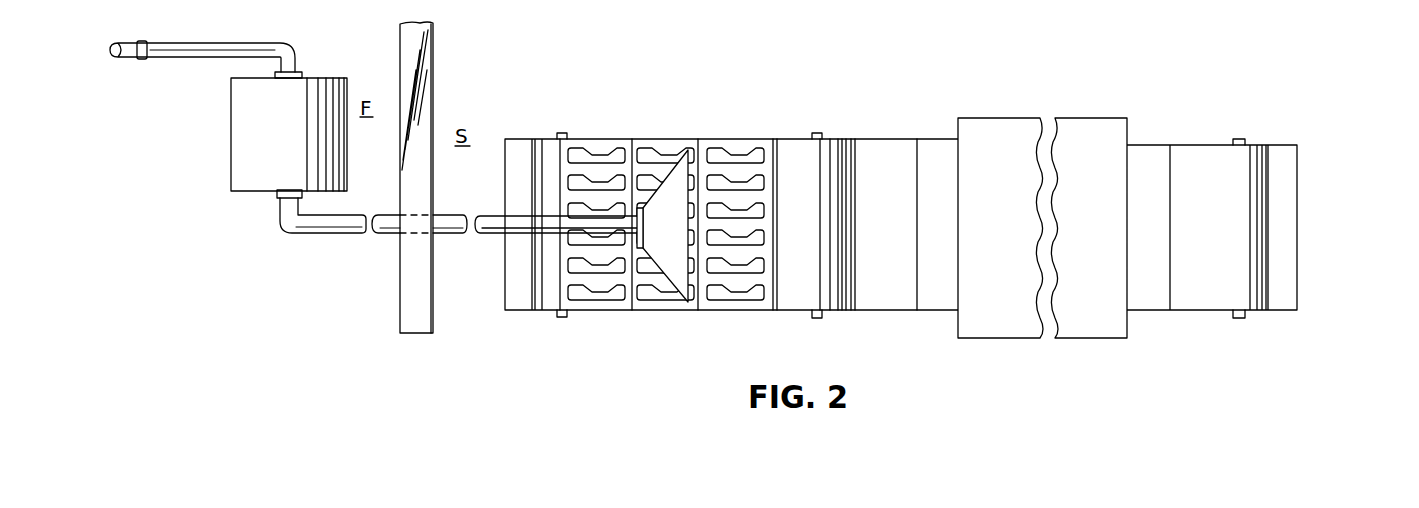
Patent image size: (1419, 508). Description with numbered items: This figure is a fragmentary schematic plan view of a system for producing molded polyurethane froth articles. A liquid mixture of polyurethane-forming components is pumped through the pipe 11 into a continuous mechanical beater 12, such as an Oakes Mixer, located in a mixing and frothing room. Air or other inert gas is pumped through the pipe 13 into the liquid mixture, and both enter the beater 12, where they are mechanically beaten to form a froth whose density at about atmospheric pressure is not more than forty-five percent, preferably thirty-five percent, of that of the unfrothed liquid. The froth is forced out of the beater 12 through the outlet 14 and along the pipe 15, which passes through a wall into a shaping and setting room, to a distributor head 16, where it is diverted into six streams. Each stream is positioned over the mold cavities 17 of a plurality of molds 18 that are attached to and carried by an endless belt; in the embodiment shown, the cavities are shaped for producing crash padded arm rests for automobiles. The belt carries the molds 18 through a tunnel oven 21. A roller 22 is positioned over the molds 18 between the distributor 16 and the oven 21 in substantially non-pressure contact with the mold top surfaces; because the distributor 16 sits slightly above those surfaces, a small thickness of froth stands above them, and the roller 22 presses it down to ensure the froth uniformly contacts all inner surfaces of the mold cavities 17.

The pipe 11 is at (122, 42).
The continuous mechanical beater 12 is at (231, 135).
The pipe 13 is at (157, 43).
The outlet 14 is at (277, 196).
The pipe 15 is at (387, 213).
The distributor head 16 is at (676, 232).
The mold cavities 17 is at (602, 152).
The molds 18 is at (595, 147).
The tunnel oven 21 is at (1008, 240).
The roller 22 is at (803, 152).